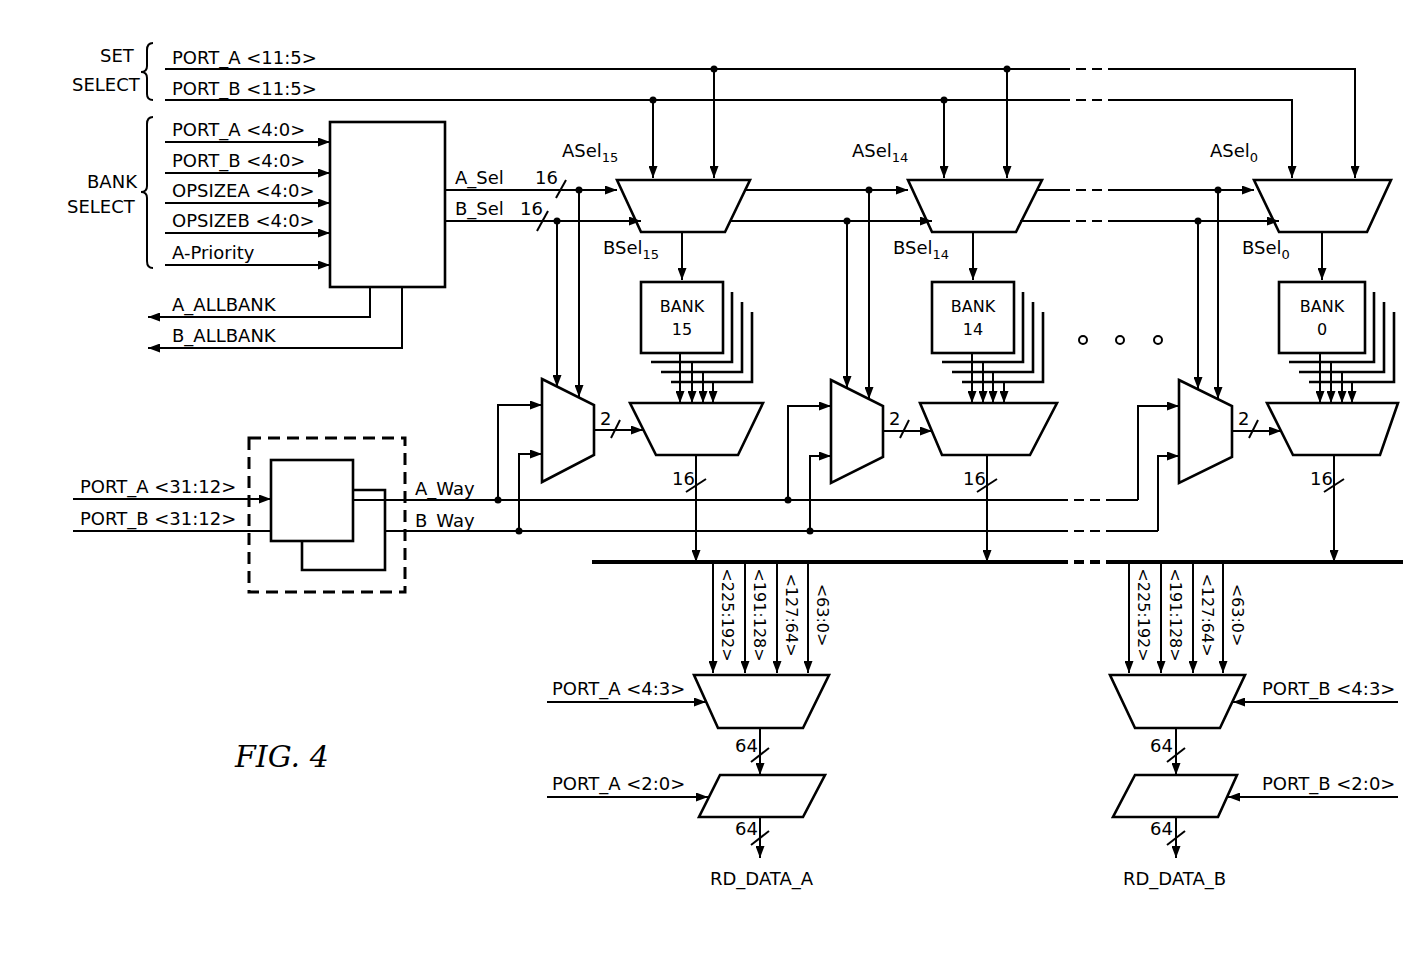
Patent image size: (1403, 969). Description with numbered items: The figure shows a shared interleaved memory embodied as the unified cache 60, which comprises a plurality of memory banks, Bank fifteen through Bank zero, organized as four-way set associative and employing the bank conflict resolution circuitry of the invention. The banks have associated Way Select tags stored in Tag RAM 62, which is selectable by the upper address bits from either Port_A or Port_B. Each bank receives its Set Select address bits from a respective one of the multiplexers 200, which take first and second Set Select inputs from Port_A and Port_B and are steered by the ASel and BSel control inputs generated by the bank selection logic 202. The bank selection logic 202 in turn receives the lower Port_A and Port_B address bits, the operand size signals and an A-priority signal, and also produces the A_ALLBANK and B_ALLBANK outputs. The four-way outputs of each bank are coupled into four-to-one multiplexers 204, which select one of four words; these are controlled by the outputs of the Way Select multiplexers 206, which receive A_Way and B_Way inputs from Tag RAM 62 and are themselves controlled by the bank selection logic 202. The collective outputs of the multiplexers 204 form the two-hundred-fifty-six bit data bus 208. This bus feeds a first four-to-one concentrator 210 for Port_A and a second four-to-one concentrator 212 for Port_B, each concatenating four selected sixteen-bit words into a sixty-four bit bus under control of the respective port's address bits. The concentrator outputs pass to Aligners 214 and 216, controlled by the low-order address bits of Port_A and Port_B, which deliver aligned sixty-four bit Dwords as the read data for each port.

The unified cache 60 is at (483, 677).
The Tag RAM 62 is at (270, 593).
The multiplexers 200 is at (1004, 206).
The bank selection logic 202 is at (445, 262).
The four-to-one multiplexers 204 is at (647, 450).
The Way Select multiplexers 206 is at (542, 388).
The data bus 208 is at (628, 566).
The first four-to-one concentrator 210 is at (826, 703).
The second four-to-one concentrator 212 is at (1118, 705).
The Aligner 214 is at (820, 797).
The Aligner 216 is at (1124, 798).